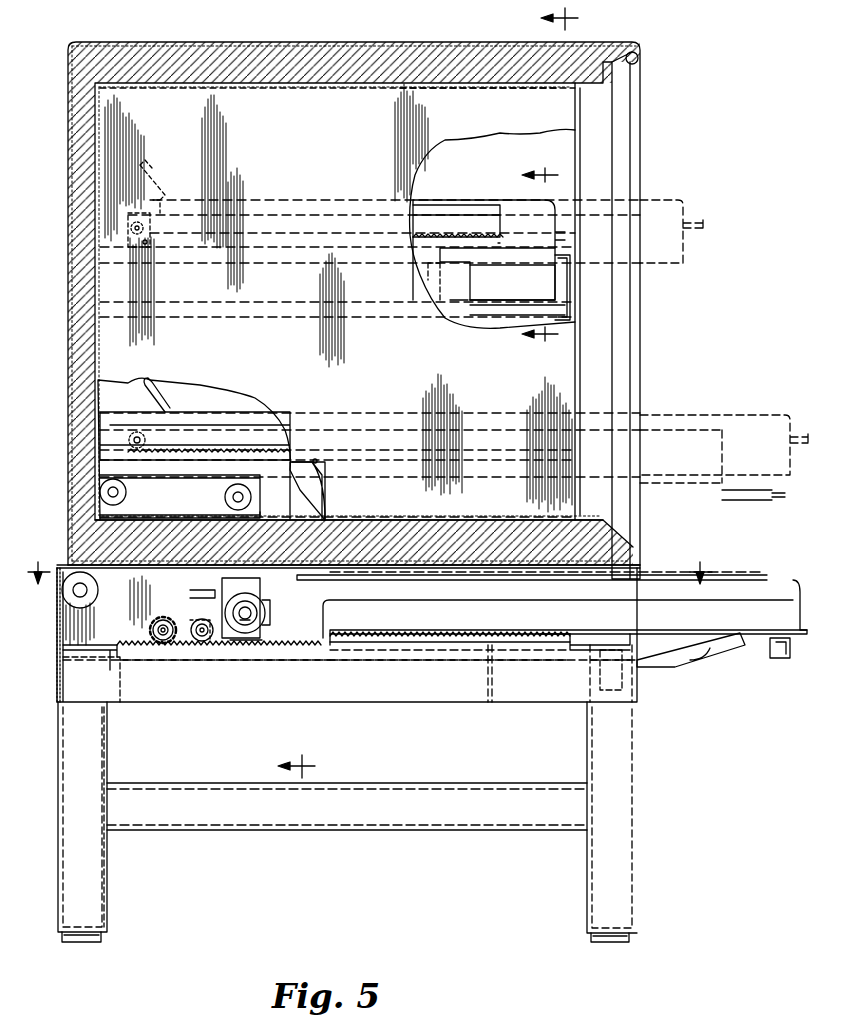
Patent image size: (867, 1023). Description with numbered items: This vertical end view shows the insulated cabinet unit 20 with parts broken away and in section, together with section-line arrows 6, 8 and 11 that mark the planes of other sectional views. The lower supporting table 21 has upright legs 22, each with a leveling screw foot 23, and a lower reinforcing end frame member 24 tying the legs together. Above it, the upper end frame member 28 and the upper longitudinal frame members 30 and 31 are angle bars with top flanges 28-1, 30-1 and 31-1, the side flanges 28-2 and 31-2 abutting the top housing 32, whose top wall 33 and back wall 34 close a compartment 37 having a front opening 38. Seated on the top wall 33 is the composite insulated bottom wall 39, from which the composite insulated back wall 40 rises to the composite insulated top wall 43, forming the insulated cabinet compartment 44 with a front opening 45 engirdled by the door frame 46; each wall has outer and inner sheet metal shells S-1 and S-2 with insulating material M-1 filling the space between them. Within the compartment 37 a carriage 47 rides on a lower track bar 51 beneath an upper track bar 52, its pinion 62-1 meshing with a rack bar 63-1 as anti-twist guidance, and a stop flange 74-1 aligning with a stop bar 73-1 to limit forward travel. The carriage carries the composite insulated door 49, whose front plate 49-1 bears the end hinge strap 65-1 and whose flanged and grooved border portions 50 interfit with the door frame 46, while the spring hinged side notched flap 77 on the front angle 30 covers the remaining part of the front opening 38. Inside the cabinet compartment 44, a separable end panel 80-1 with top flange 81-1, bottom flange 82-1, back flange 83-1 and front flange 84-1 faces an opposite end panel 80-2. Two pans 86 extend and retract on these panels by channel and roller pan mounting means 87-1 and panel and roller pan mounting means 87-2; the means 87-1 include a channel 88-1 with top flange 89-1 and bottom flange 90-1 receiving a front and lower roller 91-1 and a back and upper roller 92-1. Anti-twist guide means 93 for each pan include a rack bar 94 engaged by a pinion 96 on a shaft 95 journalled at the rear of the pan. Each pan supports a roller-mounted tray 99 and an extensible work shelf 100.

The insulated cabinet unit 20 is at (646, 76).
The lower supporting table 21 is at (644, 778).
The upright legs 22 is at (98, 879).
The leveling screw foot 23 is at (94, 944).
The lower reinforcing end frame member 24 is at (418, 815).
The upper end frame member 28 is at (420, 700).
The top flange 28-1 is at (378, 685).
The side flange 28-2 is at (225, 675).
The upper longitudinal frame member 30 is at (637, 692).
The top flange 30-1 is at (620, 655).
The upper longitudinal frame member 31 is at (60, 680).
The top flange 31-1 is at (75, 657).
The side flange 31-2 is at (70, 700).
The top housing 32 is at (54, 636).
The top wall 33 is at (142, 568).
The back wall 34 is at (75, 617).
The compartment 37 is at (243, 609).
The front opening 38 is at (637, 572).
The composite insulated bottom wall 39 is at (412, 519).
The composite insulated back wall 40 is at (70, 268).
The composite insulated top wall 43 is at (170, 42).
The insulated cabinet compartment 44 is at (492, 228).
The front opening 45 is at (640, 150).
The door frame 46 is at (638, 60).
The carriage 47 is at (226, 639).
The composite insulated door 49 is at (738, 595).
The front plate 49-1 is at (422, 632).
The flanged and grooved border portions 50 is at (770, 590).
The lower track bar 51 is at (580, 652).
The upper track bar 52 is at (420, 582).
The pinion 62-1 is at (175, 642).
The rack bar 63-1 is at (135, 630).
The end hinge strap 65-1 is at (500, 634).
The stop bar 73-1 is at (493, 690).
The stop flange 74-1 is at (115, 658).
The spring hinged side notched flap 77 is at (724, 652).
The separable end panel 80-1 is at (150, 488).
The separable end panel 80-2 is at (565, 155).
The top flange 81-1 is at (462, 89).
The bottom flange 82-1 is at (352, 519).
The back flange 83-1 is at (98, 332).
The front flange 84-1 is at (570, 380).
The pan 86 is at (455, 215).
The channel and roller pan mounting means 87-1 is at (472, 261).
The panel and roller pan mounting means 87-2 is at (574, 293).
The channel 88-1 is at (470, 285).
The top flange 89-1 is at (432, 275).
The bottom flange 90-1 is at (440, 310).
The front and lower roller 91-1 is at (268, 462).
The back and upper roller 92-1 is at (100, 490).
The anti-twist guide means 93 is at (118, 445).
The rack bar 94 is at (482, 237).
The shaft 95 is at (137, 432).
The pinion 96 is at (170, 440).
The tray 99 is at (500, 200).
The work shelf 100 is at (732, 500).
The section line 6 is at (440, 393).
The section line 8 is at (540, 253).
The section line 11 is at (371, 561).
The outer sheet metal shell S-1 is at (258, 60).
The inner sheet metal shell S-2 is at (250, 86).
The insulating material M-1 is at (378, 60).